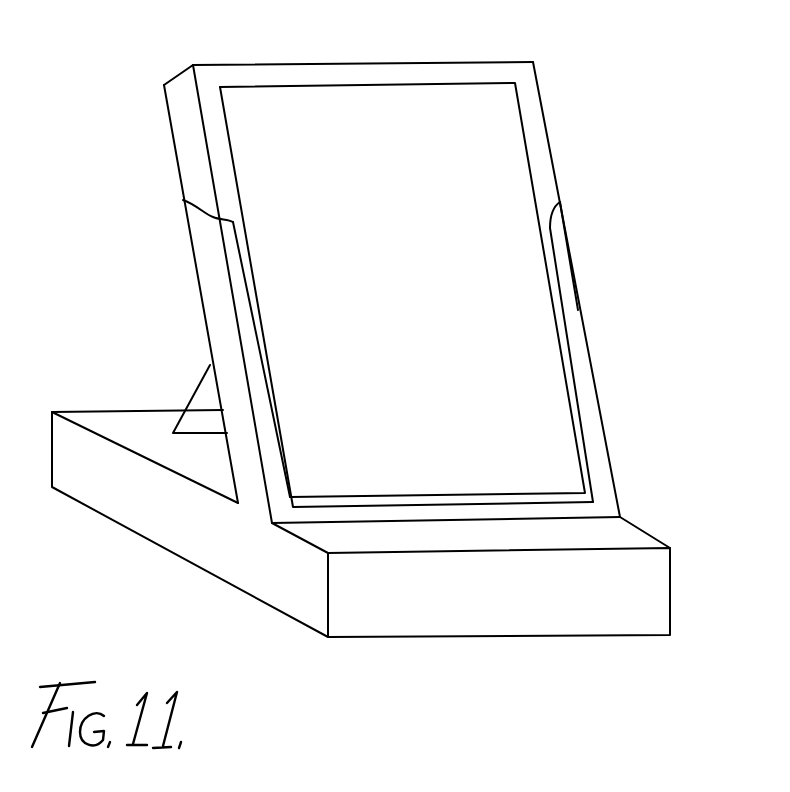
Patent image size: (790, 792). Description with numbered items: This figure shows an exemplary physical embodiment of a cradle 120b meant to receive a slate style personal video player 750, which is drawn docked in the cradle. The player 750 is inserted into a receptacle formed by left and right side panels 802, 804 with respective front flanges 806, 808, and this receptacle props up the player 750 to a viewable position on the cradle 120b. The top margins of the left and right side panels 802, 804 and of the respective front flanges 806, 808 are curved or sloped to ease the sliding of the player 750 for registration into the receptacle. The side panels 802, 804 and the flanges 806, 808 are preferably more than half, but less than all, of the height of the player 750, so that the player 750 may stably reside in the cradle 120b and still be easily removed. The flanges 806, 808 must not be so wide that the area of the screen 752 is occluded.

The slate video player 750 is at (550, 60).
The screen 752 is at (408, 186).
The left side panel 802 is at (207, 273).
The right side panel 804 is at (596, 386).
The front flange 806 is at (245, 306).
The front flange 808 is at (567, 273).
The cradle 120b is at (595, 607).